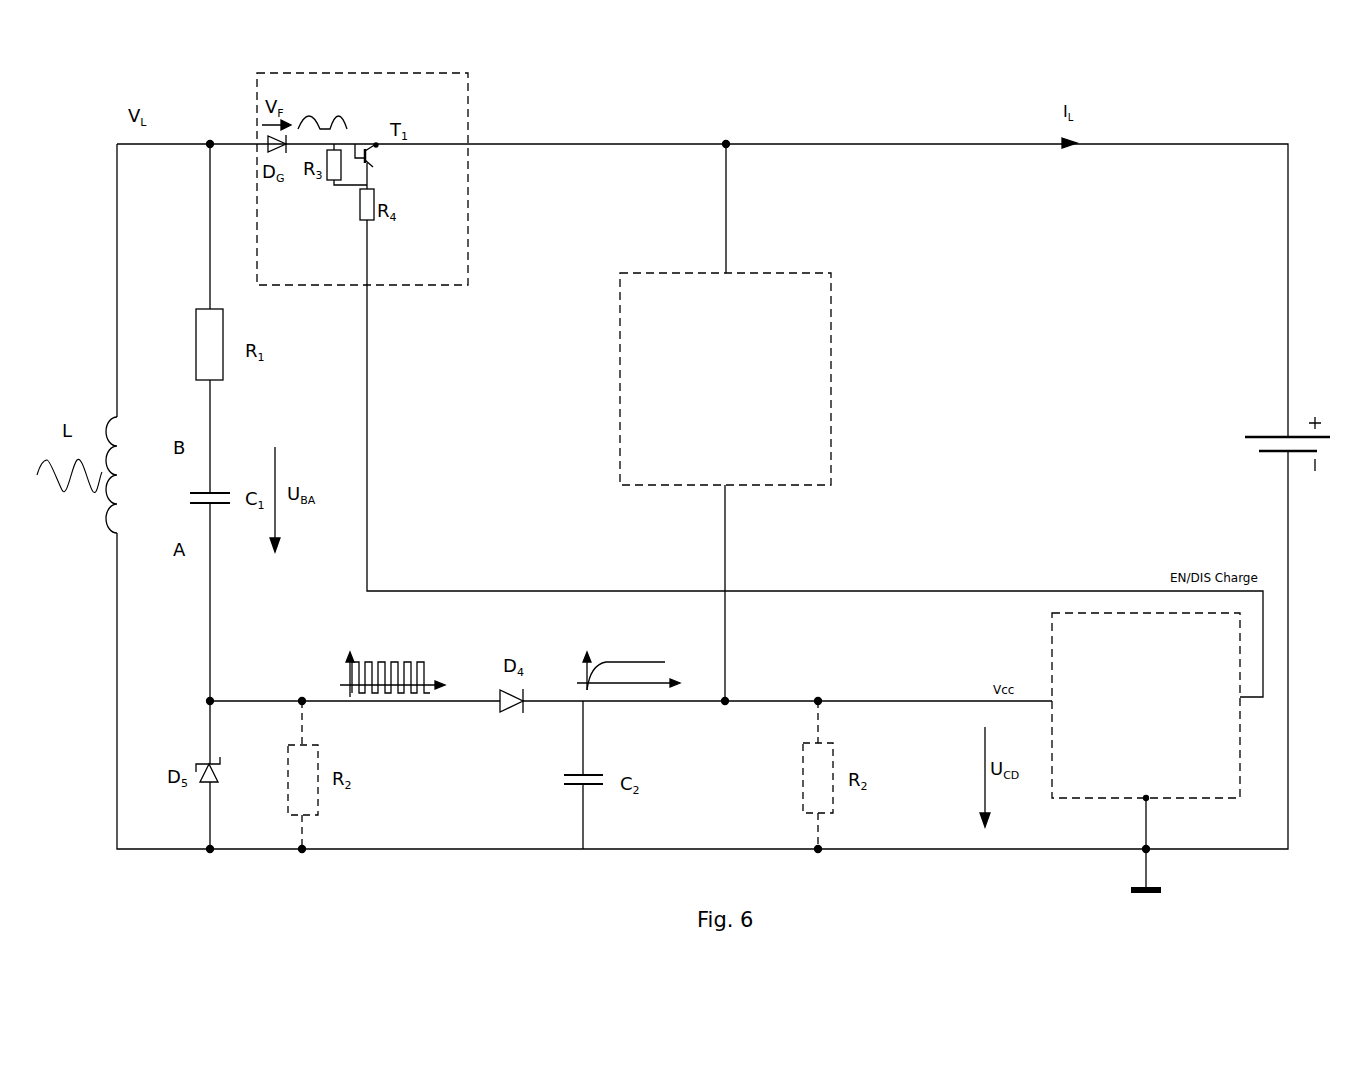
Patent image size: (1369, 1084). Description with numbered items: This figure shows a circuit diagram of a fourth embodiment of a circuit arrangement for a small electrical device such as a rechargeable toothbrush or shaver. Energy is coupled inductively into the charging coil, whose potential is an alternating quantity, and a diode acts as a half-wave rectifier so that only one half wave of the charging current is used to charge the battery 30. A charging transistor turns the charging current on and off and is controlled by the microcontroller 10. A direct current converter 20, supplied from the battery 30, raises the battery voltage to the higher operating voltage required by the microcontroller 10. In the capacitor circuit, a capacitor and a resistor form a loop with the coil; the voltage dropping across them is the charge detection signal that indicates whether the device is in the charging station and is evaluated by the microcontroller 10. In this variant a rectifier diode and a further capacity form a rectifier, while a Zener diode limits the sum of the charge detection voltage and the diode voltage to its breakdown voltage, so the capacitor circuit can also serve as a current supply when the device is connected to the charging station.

The microcontroller 10 is at (1240, 777).
The direct current converter 20 is at (833, 305).
The battery 30 is at (1301, 402).